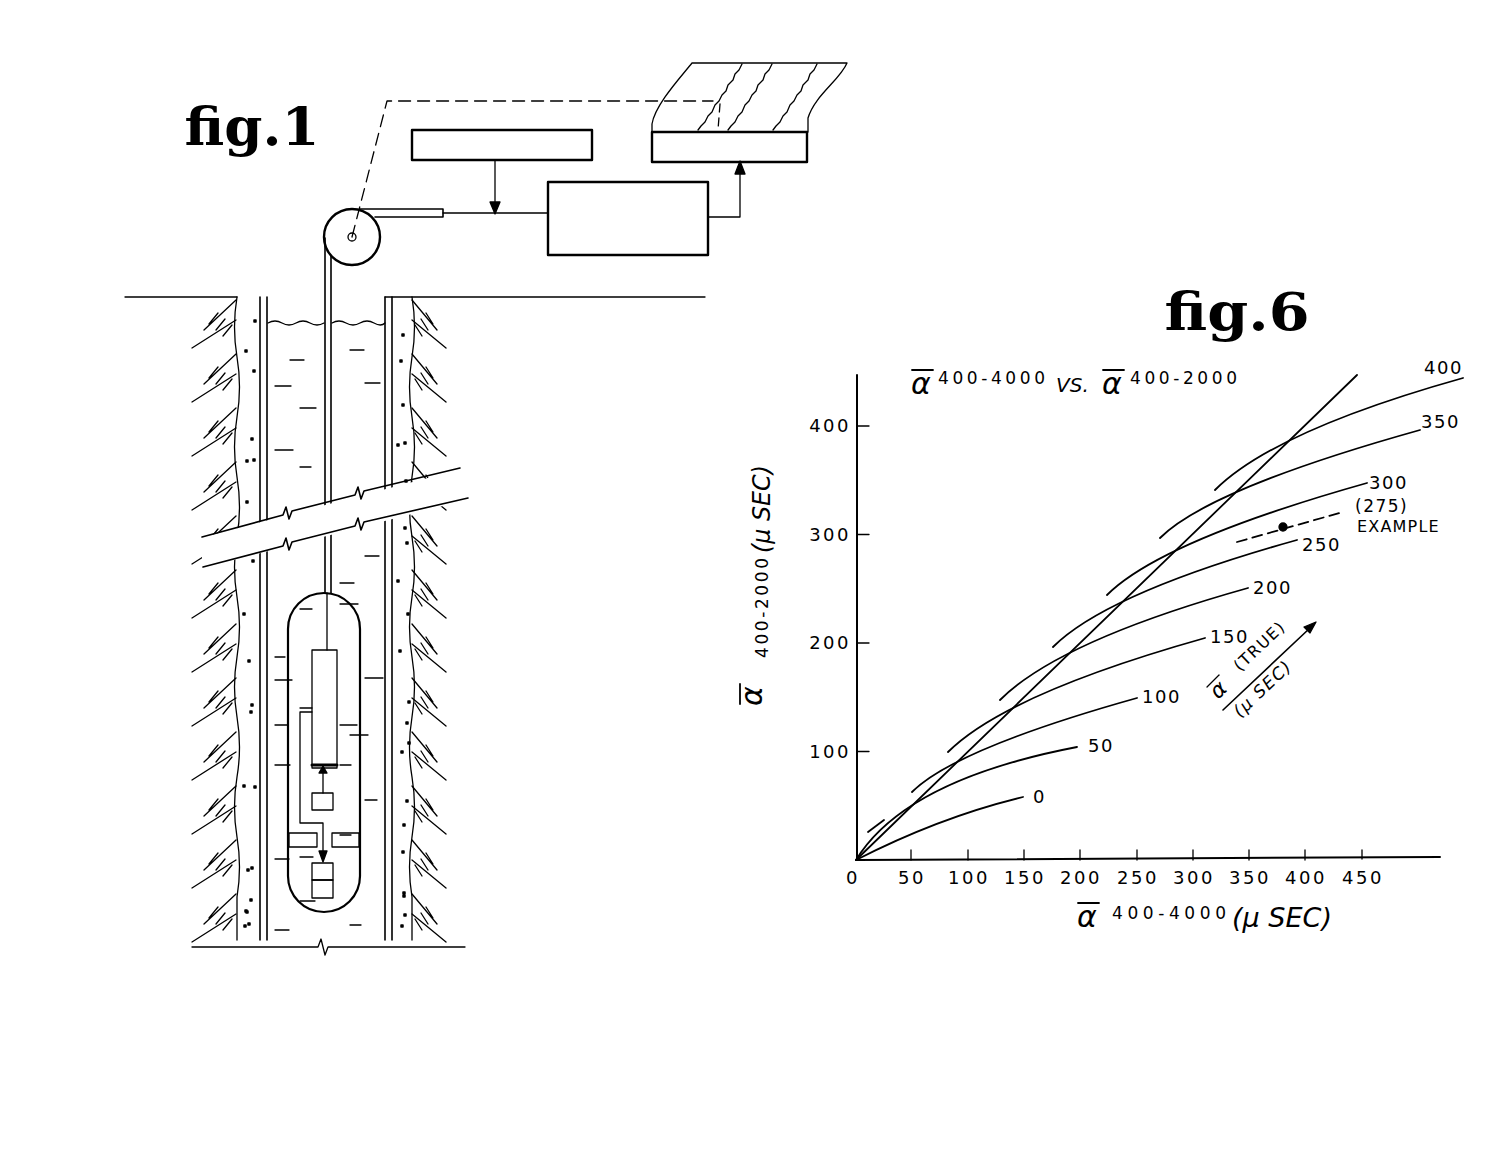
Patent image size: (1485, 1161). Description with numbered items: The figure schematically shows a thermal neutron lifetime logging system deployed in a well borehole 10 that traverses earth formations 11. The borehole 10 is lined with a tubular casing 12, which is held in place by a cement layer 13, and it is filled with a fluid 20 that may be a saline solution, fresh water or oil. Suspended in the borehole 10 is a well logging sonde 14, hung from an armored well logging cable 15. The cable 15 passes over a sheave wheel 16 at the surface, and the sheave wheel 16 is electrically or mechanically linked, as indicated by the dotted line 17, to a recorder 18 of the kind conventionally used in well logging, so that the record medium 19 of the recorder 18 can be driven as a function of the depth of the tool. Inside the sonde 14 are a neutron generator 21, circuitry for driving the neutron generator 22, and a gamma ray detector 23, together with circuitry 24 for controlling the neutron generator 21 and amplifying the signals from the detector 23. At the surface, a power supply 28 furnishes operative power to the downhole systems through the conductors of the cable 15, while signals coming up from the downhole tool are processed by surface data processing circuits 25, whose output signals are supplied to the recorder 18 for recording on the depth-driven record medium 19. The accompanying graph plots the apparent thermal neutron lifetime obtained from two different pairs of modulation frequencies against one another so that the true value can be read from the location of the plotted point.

The well borehole 10 is at (352, 322).
The earth formations 11 is at (500, 568).
The tubular casing 12 is at (264, 576).
The cement layer 13 is at (245, 641).
The well logging sonde 14 is at (364, 628).
The armored well logging cable 15 is at (325, 266).
The sheave wheel 16 is at (374, 236).
The dotted line 17 is at (523, 101).
The recorder 18 is at (807, 150).
The record medium 19 is at (842, 101).
The fluid 20 is at (308, 381).
The neutron generator 21 is at (334, 892).
The circuitry for driving the neutron generator 22 is at (334, 875).
The gamma ray detector 23 is at (334, 803).
The circuitry 24 is at (330, 690).
The surface data processing circuits 25 is at (548, 236).
The surface power supply 28 is at (592, 147).